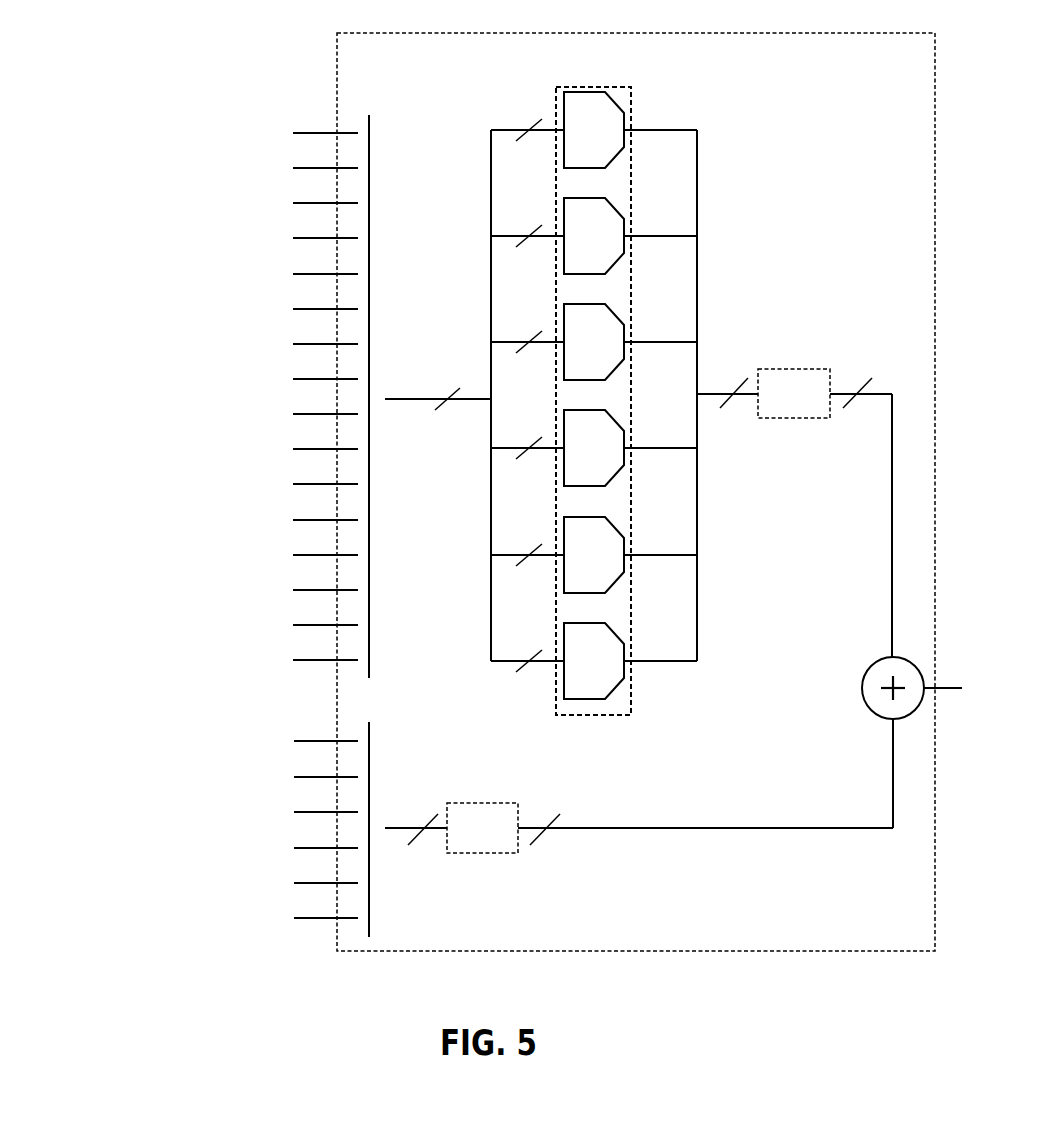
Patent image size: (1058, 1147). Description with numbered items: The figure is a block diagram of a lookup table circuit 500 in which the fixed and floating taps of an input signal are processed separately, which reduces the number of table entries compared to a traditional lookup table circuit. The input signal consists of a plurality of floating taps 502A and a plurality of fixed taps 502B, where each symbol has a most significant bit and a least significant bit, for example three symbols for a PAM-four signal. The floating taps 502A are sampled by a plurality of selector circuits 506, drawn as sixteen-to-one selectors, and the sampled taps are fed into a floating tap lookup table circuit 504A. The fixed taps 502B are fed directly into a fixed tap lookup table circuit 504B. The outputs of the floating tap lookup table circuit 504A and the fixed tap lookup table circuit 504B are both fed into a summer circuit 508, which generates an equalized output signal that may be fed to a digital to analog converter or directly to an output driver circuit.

The lookup table circuit 500 is at (100, 112).
The floating taps 502A is at (230, 182).
The fixed taps 502B is at (223, 730).
The floating tap lookup table circuit 504A is at (795, 332).
The fixed tap lookup table circuit 504B is at (482, 765).
The selector circuits 506 is at (537, 80).
The summer circuit 508 is at (855, 667).